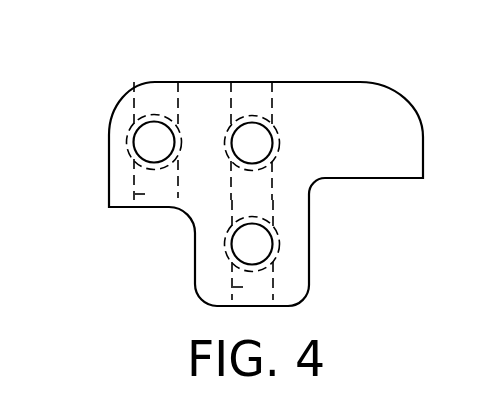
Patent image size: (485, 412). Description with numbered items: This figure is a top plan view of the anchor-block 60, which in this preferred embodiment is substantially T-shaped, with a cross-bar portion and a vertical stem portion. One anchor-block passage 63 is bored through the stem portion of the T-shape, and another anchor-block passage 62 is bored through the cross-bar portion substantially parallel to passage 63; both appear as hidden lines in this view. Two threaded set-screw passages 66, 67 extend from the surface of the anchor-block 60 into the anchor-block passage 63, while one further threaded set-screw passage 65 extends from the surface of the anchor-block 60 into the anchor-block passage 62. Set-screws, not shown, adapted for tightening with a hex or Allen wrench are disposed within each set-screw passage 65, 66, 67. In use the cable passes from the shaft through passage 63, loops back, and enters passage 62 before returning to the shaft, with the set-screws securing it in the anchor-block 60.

The anchor-block 60 is at (256, 80).
The anchor-block passage 62 is at (138, 186).
The anchor-block passage 63 is at (236, 281).
The threaded set-screw passage 65 is at (177, 141).
The threaded set-screw passage 66 is at (275, 136).
The threaded set-screw passage 67 is at (272, 235).